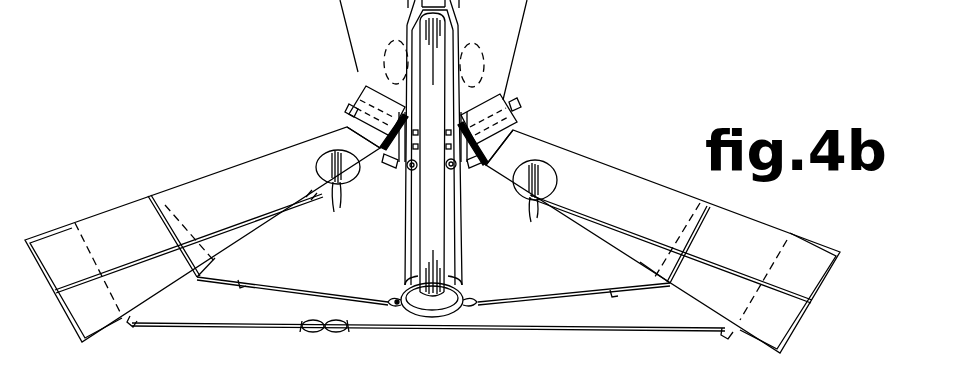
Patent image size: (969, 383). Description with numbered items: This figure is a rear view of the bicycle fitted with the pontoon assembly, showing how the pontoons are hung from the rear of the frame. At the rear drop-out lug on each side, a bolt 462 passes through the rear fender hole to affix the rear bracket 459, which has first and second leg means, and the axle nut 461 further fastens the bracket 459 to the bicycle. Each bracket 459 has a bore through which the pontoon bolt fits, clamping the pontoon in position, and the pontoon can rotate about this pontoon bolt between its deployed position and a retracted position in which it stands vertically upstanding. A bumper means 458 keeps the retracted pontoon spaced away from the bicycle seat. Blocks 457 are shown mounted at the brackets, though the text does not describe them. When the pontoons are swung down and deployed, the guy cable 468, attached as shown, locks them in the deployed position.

The mounting block 457 is at (352, 107).
The bumper means 458 is at (323, 168).
The rear bracket 459 is at (347, 127).
The axle nut 461 is at (408, 172).
The bolt 462 is at (362, 83).
The guy cable 468 is at (303, 290).